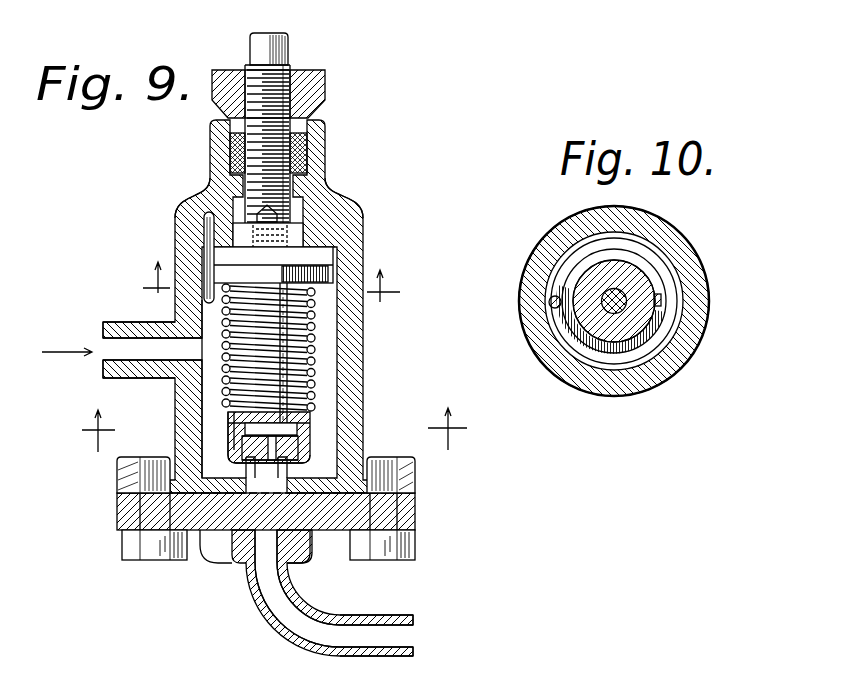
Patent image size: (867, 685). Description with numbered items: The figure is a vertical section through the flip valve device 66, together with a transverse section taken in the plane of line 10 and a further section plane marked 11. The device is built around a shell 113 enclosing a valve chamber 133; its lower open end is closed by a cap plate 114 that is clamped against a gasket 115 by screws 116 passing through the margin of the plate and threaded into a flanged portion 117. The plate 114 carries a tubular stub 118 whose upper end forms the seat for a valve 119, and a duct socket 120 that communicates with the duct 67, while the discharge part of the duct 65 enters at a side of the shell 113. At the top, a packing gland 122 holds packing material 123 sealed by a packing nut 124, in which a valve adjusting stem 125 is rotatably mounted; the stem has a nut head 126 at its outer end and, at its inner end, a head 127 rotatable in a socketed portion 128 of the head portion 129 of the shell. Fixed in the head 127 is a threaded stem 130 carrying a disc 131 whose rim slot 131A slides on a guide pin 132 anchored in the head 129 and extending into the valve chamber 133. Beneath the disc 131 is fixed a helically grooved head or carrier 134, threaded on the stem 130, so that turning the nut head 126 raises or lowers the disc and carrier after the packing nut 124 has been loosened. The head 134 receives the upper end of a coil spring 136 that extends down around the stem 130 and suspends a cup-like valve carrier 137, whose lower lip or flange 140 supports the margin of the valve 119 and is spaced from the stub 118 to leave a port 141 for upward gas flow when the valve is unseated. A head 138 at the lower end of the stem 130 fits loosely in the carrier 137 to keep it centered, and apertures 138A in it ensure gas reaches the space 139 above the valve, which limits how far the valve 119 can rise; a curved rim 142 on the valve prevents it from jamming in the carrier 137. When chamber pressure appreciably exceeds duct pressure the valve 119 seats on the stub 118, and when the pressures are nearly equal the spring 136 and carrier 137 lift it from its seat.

In FIG. 9, the section line 10— 10 is at (268, 294).
In FIG. 9, the section line 11- 11 is at (274, 430).
In FIG. 9, the duct 65 is at (118, 322).
In FIG. 9, the flip valve device 66 is at (166, 208).
In FIG. 9, the duct 67 is at (352, 657).
In FIG. 9, the shell 113 is at (350, 366).
In FIG. 10, the shell 113 is at (657, 375).
In FIG. 9, the cap plate 114 is at (212, 556).
In FIG. 9, the gasket 115 is at (416, 492).
In FIG. 9, the screws 116 is at (117, 515).
In FIG. 9, the flanged portion 117 is at (117, 479).
In FIG. 9, the tubular stub 118 is at (245, 545).
In FIG. 9, the valve 119 is at (300, 427).
In FIG. 9, the duct socket 120 is at (262, 566).
In FIG. 9, the packing gland 122 is at (305, 150).
In FIG. 9, the packing material 123 is at (280, 145).
In FIG. 9, the packing nut 124 is at (326, 92).
In FIG. 9, the valve adjusting stem 125 is at (292, 68).
In FIG. 9, the nut head 126 is at (288, 40).
In FIG. 9, the head 127 is at (302, 226).
In FIG. 9, the socketed portion 128 is at (304, 236).
In FIG. 9, the head portion 129 is at (305, 265).
In FIG. 9, the threaded stem 130 is at (312, 297).
In FIG. 10, the threaded stem 130 is at (614, 348).
In FIG. 9, the disc 131 is at (322, 273).
In FIG. 10, the disc 131 is at (572, 352).
In FIG. 10, the slot 131A is at (568, 288).
In FIG. 9, the guide pin 132 is at (206, 232).
In FIG. 10, the guide pin 132 is at (550, 305).
In FIG. 9, the valve chamber 133 is at (210, 383).
In FIG. 9, the head or carrier 134 is at (330, 290).
In FIG. 10, the head or carrier 134 is at (640, 316).
In FIG. 9, the coil spring 136 is at (300, 386).
In FIG. 10, the coil spring 136 is at (622, 318).
In FIG. 9, the valve carrier 137 is at (300, 440).
In FIG. 9, the head 138 is at (305, 410).
In FIG. 9, the apertures 138A is at (232, 412).
In FIG. 9, the space 139 is at (240, 418).
In FIG. 9, the lip or flange 140 is at (245, 428).
In FIG. 9, the port 141 is at (190, 545).
In FIG. 9, the curved rim 142 is at (300, 453).